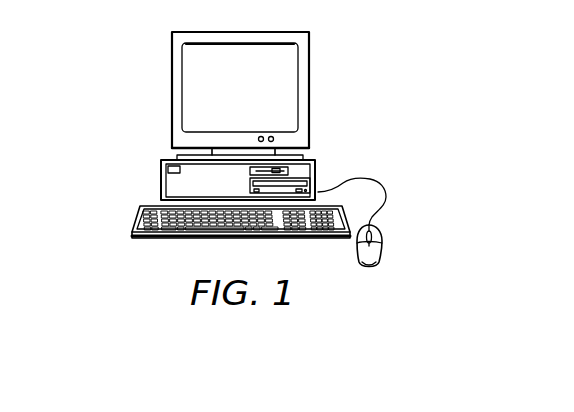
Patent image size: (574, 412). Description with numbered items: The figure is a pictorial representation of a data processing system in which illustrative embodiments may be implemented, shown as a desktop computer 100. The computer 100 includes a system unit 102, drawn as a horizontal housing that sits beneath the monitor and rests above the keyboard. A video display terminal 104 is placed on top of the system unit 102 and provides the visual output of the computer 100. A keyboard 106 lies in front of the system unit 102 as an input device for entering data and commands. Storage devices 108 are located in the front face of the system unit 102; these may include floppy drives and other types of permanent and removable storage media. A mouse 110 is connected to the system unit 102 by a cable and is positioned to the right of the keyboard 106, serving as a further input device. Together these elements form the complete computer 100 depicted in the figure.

The computer 100 is at (106, 77).
The system unit 102 is at (161, 171).
The video display terminal 104 is at (310, 93).
The keyboard 106 is at (139, 218).
The storage devices 108 is at (288, 173).
The mouse 110 is at (383, 247).